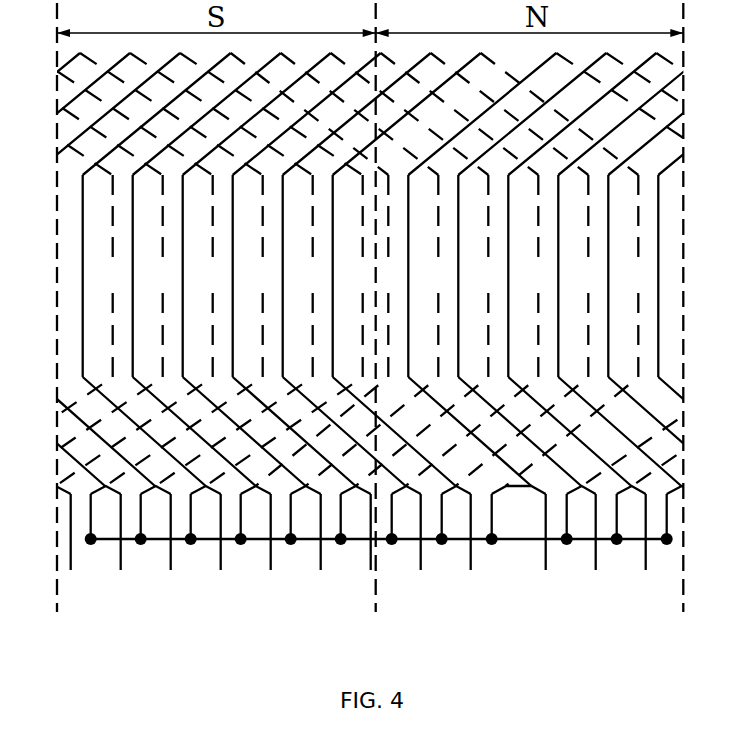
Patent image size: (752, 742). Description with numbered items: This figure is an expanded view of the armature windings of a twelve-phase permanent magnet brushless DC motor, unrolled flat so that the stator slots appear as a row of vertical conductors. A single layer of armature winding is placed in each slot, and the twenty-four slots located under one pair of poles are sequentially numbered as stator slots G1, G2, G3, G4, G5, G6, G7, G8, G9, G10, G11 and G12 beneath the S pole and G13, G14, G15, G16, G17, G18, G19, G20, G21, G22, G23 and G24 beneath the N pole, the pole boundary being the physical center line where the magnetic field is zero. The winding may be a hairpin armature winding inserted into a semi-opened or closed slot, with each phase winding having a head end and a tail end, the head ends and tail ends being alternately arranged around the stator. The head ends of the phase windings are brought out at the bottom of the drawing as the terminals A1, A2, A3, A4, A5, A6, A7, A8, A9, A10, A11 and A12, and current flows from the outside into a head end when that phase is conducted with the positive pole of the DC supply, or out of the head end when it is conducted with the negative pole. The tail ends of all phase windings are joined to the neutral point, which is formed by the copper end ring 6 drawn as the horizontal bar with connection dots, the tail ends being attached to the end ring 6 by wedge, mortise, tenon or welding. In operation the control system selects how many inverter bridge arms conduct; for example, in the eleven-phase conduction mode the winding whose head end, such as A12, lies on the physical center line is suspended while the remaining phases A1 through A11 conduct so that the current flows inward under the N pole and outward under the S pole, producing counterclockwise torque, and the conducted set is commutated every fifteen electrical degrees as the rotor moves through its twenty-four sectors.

The end ring 6 is at (157, 539).
The stator slot G1 is at (94, 276).
The stator slot G2 is at (120, 276).
The stator slot G3 is at (144, 276).
The stator slot G4 is at (170, 276).
The stator slot G5 is at (194, 276).
The stator slot G6 is at (220, 276).
The stator slot G7 is at (244, 276).
The stator slot G8 is at (270, 276).
The stator slot G9 is at (294, 276).
The stator slot G10 is at (323, 276).
The stator slot G11 is at (347, 276).
The stator slot G12 is at (373, 276).
The stator slot G13 is at (398, 276).
The stator slot G14 is at (422, 276).
The stator slot G15 is at (448, 276).
The stator slot G16 is at (472, 276).
The stator slot G17 is at (498, 276).
The stator slot G18 is at (522, 276).
The stator slot G19 is at (548, 276).
The stator slot G20 is at (572, 276).
The stator slot G21 is at (598, 276).
The stator slot G22 is at (622, 276).
The stator slot G23 is at (648, 276).
The stator slot G24 is at (672, 276).
The head end of phase armature winding A1 is at (224, 550).
The head end of phase armature winding A2 is at (549, 550).
The head end of phase armature winding A3 is at (274, 550).
The head end of phase armature winding A4 is at (599, 550).
The head end of phase armature winding A5 is at (324, 550).
The head end of phase armature winding A6 is at (649, 550).
The head end of phase armature winding A7 is at (359, 550).
The head end of phase armature winding A8 is at (78, 550).
The head end of phase armature winding A9 is at (424, 550).
The head end of phase armature winding A10 is at (128, 550).
The head end of phase armature winding A11 is at (478, 550).
The head end of phase armature winding A12 is at (178, 550).